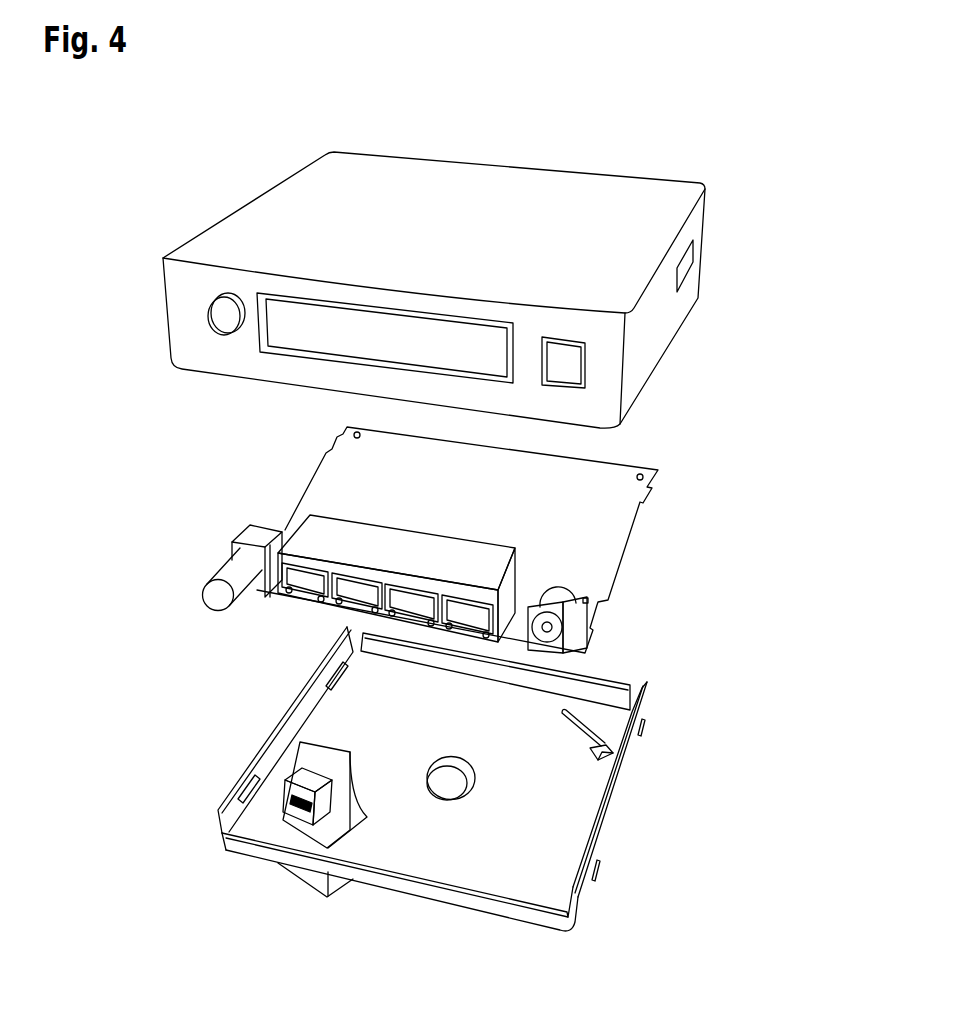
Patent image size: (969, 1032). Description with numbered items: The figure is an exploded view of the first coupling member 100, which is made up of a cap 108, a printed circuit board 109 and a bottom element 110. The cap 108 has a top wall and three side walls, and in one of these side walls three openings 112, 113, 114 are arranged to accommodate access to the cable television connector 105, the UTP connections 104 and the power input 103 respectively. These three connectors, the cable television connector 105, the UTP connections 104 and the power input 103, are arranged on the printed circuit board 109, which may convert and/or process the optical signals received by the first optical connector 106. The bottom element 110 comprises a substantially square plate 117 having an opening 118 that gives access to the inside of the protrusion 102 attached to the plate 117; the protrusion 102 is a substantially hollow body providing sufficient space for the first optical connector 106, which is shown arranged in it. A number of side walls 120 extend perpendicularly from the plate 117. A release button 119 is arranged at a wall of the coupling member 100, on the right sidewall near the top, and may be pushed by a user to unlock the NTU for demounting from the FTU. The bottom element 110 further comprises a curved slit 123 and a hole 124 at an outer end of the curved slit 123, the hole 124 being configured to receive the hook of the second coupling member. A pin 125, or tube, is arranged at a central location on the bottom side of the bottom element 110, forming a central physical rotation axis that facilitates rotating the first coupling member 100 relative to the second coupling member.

The first coupling member 100 is at (622, 117).
The protrusion 102 is at (315, 885).
The power input 103 is at (555, 583).
The UTP connections 104 is at (413, 543).
The cable television connector 105 is at (218, 577).
The first optical connector 106 is at (300, 773).
The cap 108 is at (703, 212).
The printed circuit board 109 is at (620, 543).
The bottom element 110 is at (547, 268).
The opening 112 is at (228, 322).
The opening 113 is at (302, 330).
The opening 114 is at (567, 374).
The plate 117 is at (537, 838).
The opening 118 is at (347, 790).
The release button 119 is at (693, 258).
The side walls 120 is at (397, 663).
The curved slit 123 is at (565, 717).
The hole 124 is at (593, 760).
The pin 125 is at (447, 795).